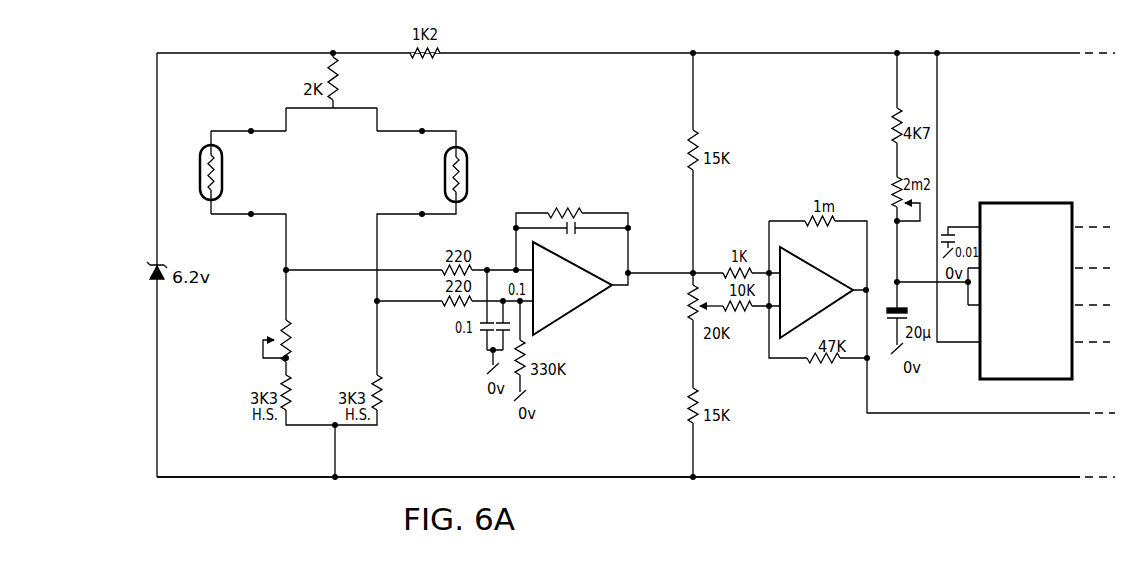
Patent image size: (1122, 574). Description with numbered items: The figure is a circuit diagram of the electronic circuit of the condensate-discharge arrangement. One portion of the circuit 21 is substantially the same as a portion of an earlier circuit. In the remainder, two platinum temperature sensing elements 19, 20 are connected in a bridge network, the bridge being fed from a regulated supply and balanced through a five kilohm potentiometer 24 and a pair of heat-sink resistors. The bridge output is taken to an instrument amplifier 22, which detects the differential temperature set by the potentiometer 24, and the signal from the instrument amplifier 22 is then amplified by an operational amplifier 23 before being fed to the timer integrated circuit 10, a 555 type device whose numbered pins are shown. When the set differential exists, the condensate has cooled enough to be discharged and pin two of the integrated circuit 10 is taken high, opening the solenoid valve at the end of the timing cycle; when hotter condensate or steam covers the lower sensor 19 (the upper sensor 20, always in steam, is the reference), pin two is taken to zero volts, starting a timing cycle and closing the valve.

The timer integrated circuit 10 is at (1045, 291).
The temperature sensing element 19 is at (196, 158).
The temperature sensing element 20 is at (472, 146).
The portion of the circuit 21 is at (678, 484).
The instrument amplifier 22 is at (590, 345).
The operational amplifier 23 is at (789, 350).
The potentiometer 24 is at (302, 335).